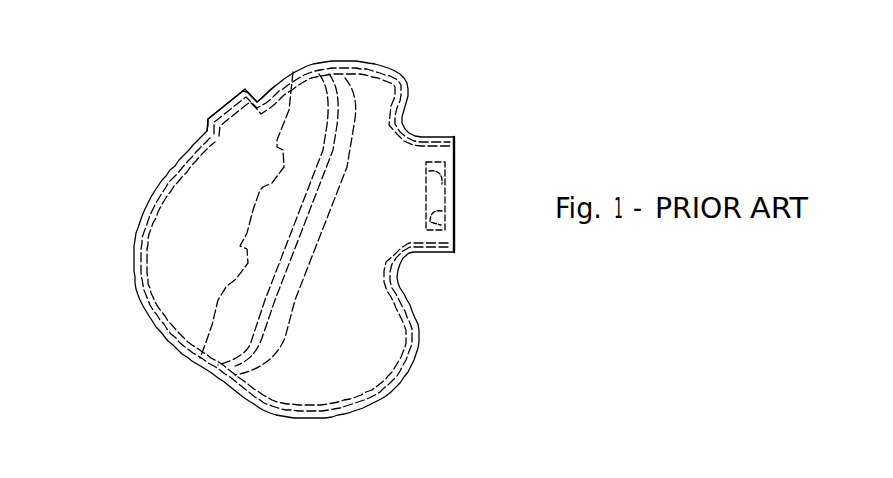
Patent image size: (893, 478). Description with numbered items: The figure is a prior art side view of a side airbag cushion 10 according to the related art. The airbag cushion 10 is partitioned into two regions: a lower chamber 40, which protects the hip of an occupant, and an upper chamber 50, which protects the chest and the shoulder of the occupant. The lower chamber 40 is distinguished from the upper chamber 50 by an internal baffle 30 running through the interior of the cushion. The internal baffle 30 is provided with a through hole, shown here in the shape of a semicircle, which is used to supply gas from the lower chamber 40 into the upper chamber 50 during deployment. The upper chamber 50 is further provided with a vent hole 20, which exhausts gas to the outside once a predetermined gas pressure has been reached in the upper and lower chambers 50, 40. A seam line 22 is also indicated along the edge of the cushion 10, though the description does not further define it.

The airbag cushion 10 is at (405, 57).
The vent hole 20 is at (236, 110).
The inner seam 22 is at (153, 233).
The internal baffle 30 is at (227, 345).
The lower chamber 40 is at (347, 330).
The upper chamber 50 is at (278, 117).